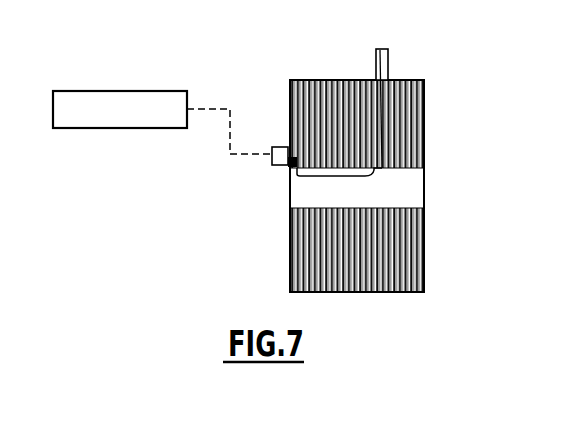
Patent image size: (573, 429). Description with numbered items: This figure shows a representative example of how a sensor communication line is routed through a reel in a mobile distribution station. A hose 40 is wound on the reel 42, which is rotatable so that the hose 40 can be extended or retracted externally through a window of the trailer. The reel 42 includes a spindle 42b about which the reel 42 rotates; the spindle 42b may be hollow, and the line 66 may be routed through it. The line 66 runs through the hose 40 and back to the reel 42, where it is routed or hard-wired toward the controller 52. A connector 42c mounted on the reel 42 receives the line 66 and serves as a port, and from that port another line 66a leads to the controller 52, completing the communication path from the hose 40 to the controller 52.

The hose 40 is at (388, 62).
The reel 42 is at (425, 262).
The spindle 42b is at (417, 200).
The connector 42c is at (283, 170).
The controller 52 is at (103, 91).
The line 66 is at (373, 176).
The another line 66a is at (215, 109).